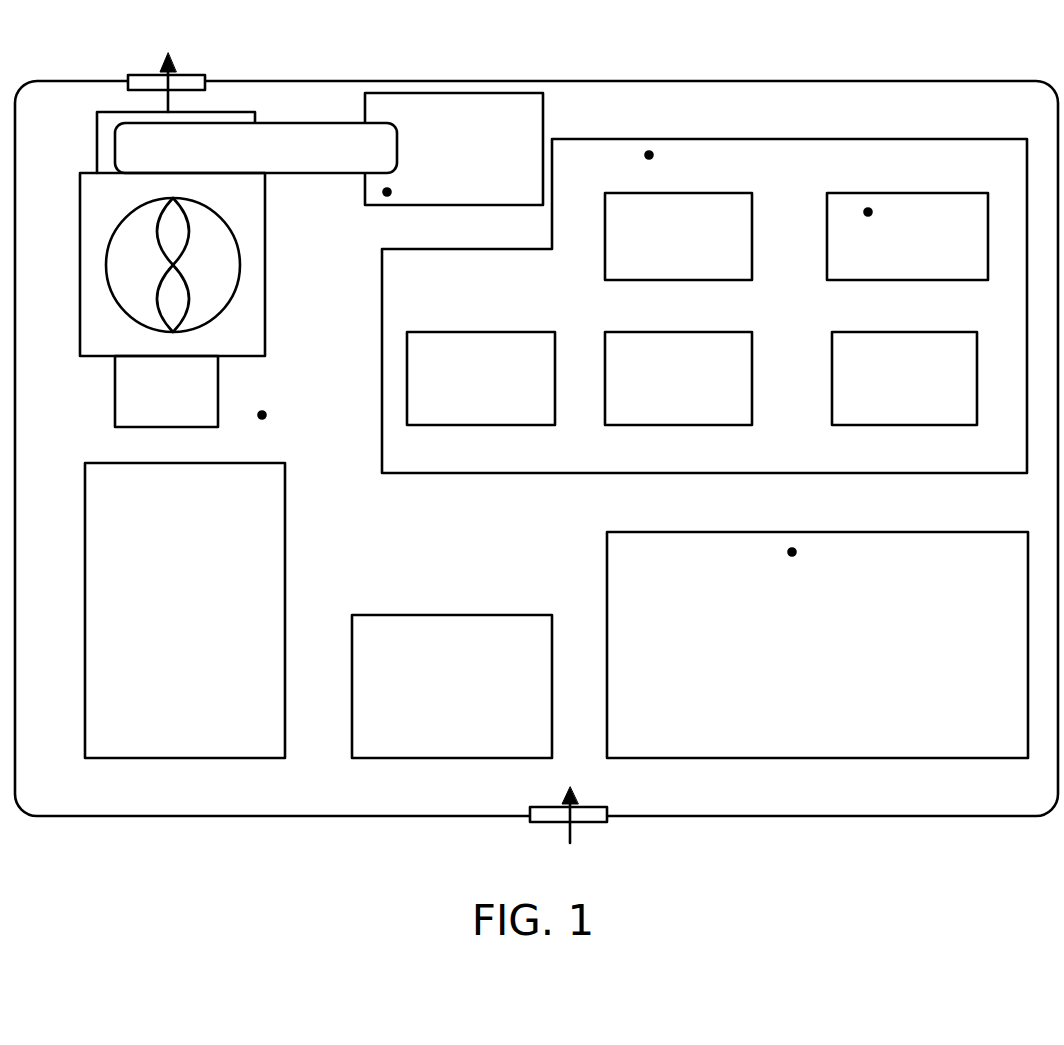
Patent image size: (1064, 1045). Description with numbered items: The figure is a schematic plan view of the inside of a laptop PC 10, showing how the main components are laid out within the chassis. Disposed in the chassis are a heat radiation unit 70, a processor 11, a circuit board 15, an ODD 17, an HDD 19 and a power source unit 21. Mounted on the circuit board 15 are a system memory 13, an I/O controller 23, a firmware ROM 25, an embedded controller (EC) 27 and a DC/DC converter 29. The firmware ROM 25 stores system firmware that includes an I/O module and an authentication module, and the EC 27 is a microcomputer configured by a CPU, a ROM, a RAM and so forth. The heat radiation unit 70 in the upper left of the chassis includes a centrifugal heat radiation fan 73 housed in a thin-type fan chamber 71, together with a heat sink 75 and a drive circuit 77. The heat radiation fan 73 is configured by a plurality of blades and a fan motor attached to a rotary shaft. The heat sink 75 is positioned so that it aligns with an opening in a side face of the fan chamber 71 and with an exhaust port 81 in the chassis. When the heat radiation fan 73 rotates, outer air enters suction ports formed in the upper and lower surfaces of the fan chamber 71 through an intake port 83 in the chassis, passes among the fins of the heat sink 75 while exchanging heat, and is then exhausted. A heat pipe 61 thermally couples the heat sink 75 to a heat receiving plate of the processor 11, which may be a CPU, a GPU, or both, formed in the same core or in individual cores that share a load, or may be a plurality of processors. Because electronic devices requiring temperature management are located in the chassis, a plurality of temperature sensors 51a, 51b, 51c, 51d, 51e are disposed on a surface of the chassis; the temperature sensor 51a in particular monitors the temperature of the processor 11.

The laptop PC 10 is at (942, 81).
The processor 11 is at (433, 93).
The system memory 13 is at (732, 193).
The circuit board 15 is at (1000, 139).
The ODD 17 is at (263, 463).
The HDD 19 is at (493, 615).
The power source unit 21 is at (655, 532).
The I/O controller 23 is at (950, 193).
The firmware ROM 25 is at (515, 332).
The embedded controller (EC) 27 is at (733, 332).
The DC/DC converter 29 is at (945, 332).
The temperature sensor 51a is at (385, 195).
The temperature sensor 51b is at (650, 153).
The temperature sensor 51c is at (264, 413).
The temperature sensor 51d is at (869, 210).
The temperature sensor 51e is at (793, 550).
The heat pipe 61 is at (300, 123).
The heat radiation unit 70 is at (216, 251).
The fan chamber 71 is at (252, 298).
The heat radiation fan 73 is at (190, 235).
The heat sink 75 is at (217, 112).
The drive circuit 77 is at (115, 405).
The exhaust port 81 is at (183, 72).
The intake port 83 is at (593, 823).